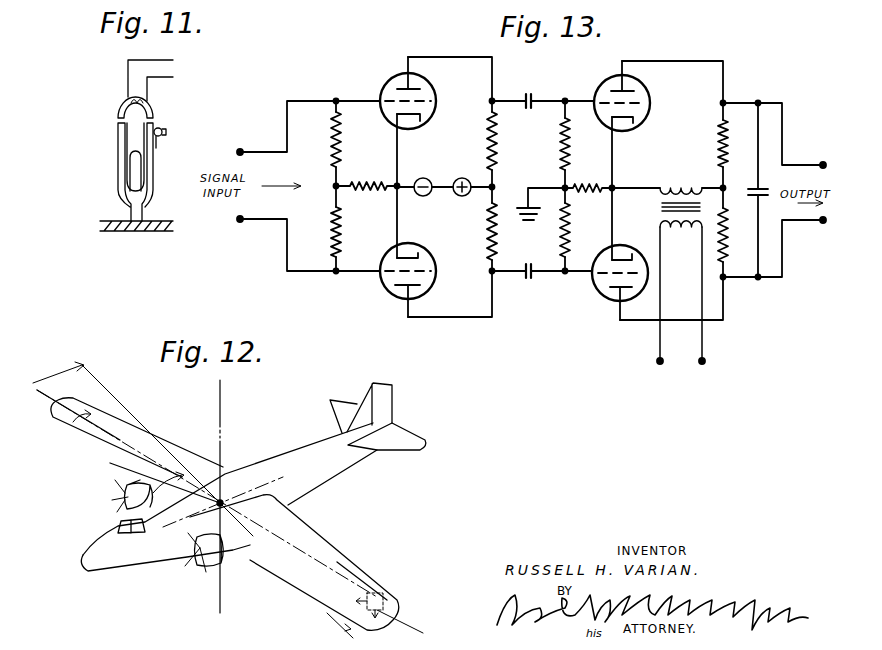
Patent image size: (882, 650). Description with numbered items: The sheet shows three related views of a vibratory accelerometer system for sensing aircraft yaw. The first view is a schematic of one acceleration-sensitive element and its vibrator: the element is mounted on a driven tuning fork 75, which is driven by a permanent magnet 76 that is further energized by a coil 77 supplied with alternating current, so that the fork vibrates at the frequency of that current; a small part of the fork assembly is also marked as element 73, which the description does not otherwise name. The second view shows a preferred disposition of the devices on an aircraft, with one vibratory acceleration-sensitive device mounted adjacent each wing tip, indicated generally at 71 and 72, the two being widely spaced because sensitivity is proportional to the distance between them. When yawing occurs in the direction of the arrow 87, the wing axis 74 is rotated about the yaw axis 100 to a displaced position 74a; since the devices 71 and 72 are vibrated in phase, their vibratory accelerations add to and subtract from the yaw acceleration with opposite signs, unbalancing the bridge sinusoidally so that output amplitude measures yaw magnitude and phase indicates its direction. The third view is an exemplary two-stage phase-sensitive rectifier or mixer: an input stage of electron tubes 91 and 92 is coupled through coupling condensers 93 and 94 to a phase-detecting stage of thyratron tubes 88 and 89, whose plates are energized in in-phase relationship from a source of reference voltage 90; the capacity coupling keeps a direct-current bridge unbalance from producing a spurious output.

In FIG. 11, the electron collecting electrode 73 is at (167, 133).
In FIG. 11, the driven tuning fork 75 is at (118, 172).
In FIG. 11, the permanent magnet 76 is at (154, 108).
In FIG. 11, the coil 77 is at (135, 96).
In FIG. 13, the thyratron tube 88 is at (600, 83).
In FIG. 13, the thyratron tube 89 is at (607, 307).
In FIG. 13, the source of reference voltage 90 is at (688, 366).
In FIG. 13, the electron tube 91 is at (391, 87).
In FIG. 13, the electron tube 92 is at (383, 297).
In FIG. 13, the coupling condenser 93 is at (530, 93).
In FIG. 13, the coupling condenser 94 is at (526, 283).
In FIG. 12, the yaw axis 100 is at (222, 417).
In FIG. 12, the acceleration-sensitive device 72 is at (73, 398).
In FIG. 12, the axis 74 is at (310, 560).
In FIG. 12, the position 74a is at (328, 614).
In FIG. 12, the acceleration-sensitive device 71 is at (387, 594).
In FIG. 12, the arrow 87 is at (390, 624).